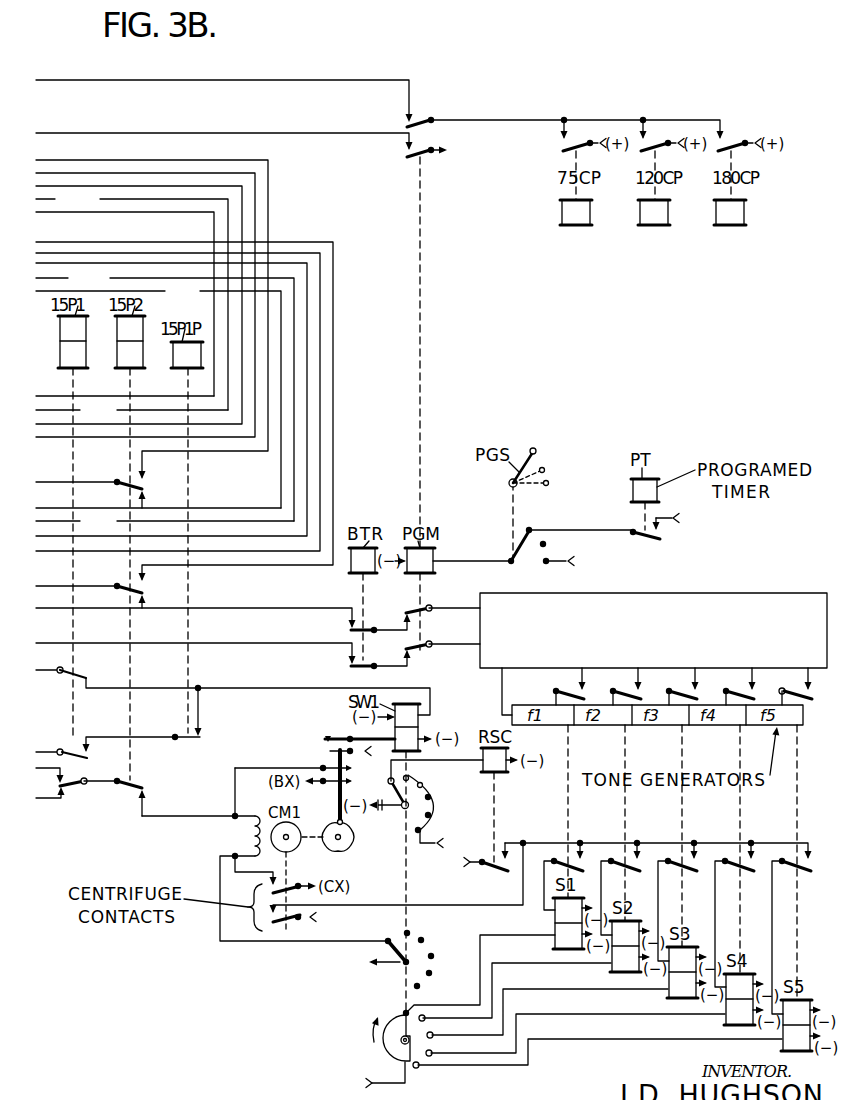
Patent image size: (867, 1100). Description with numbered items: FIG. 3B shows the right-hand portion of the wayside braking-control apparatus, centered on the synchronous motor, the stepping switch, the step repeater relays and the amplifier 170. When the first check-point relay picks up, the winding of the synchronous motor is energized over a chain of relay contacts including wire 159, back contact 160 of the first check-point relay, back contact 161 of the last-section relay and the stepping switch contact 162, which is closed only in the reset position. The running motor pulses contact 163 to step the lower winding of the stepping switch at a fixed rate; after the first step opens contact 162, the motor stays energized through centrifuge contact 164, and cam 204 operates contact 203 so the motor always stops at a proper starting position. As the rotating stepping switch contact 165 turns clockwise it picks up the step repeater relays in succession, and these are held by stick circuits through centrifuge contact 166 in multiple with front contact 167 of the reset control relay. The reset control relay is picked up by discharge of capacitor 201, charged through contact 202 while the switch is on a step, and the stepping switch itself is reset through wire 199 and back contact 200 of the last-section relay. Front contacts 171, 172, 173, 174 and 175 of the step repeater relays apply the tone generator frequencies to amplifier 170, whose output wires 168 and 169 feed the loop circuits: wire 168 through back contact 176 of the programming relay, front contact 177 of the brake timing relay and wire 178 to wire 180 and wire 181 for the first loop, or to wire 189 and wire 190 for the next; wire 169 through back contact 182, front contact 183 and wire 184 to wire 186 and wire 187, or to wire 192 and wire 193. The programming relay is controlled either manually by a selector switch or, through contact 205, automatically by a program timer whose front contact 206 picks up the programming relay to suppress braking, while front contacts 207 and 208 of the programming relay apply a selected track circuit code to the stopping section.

The wire 159 is at (48, 800).
The back contact of relay 11P1 160 is at (72, 784).
The back contact of relay 15P2 161 is at (132, 783).
The contact of stepping switch SW1 162 is at (413, 938).
The contact 163 is at (345, 753).
The centrifuge contact 164 is at (287, 880).
The stepping switch contact 165 is at (382, 1049).
The centrifuge contact 166 is at (290, 926).
The front contact of reset relay RSC 167 is at (500, 872).
The output wire 168 is at (465, 608).
The output wire 169 is at (465, 645).
The amplifier 170 is at (728, 585).
The front contact of relay S1 171 is at (570, 693).
The front contact of relay S2 172 is at (628, 693).
The front contact of relay S3 173 is at (684, 693).
The front contact of relay S4 174 is at (741, 693).
The front contact of relay S5 175 is at (797, 693).
The back contact of programming relay PGM 176 is at (414, 608).
The front contact of relay BTR 177 is at (368, 634).
The wire 178 is at (78, 608).
The wire 180 is at (52, 508).
The wire 181 is at (158, 394).
The back contact of programming relay PGM 182 is at (422, 650).
The front contact of relay BTR 183 is at (356, 667).
The wire 184 is at (67, 643).
The wire 186 is at (57, 396).
The wire 187 is at (60, 214).
The wire 189 is at (165, 521).
The wire 190 is at (165, 395).
The wire 192 is at (132, 411).
The wire 193 is at (132, 300).
The wire 199 is at (60, 663).
The back contact of relay 15P1 200 is at (72, 683).
The capacitor 201 is at (396, 810).
The contact of stepping switch SW1 202 is at (410, 812).
The contact 203 is at (340, 787).
The cam 204 is at (350, 849).
The contact 205 is at (533, 558).
The front contact of program timer PT 206 is at (667, 538).
The front contact of programming relay PGM 207 is at (428, 158).
The front contact of programming relay PGM 208 is at (420, 119).